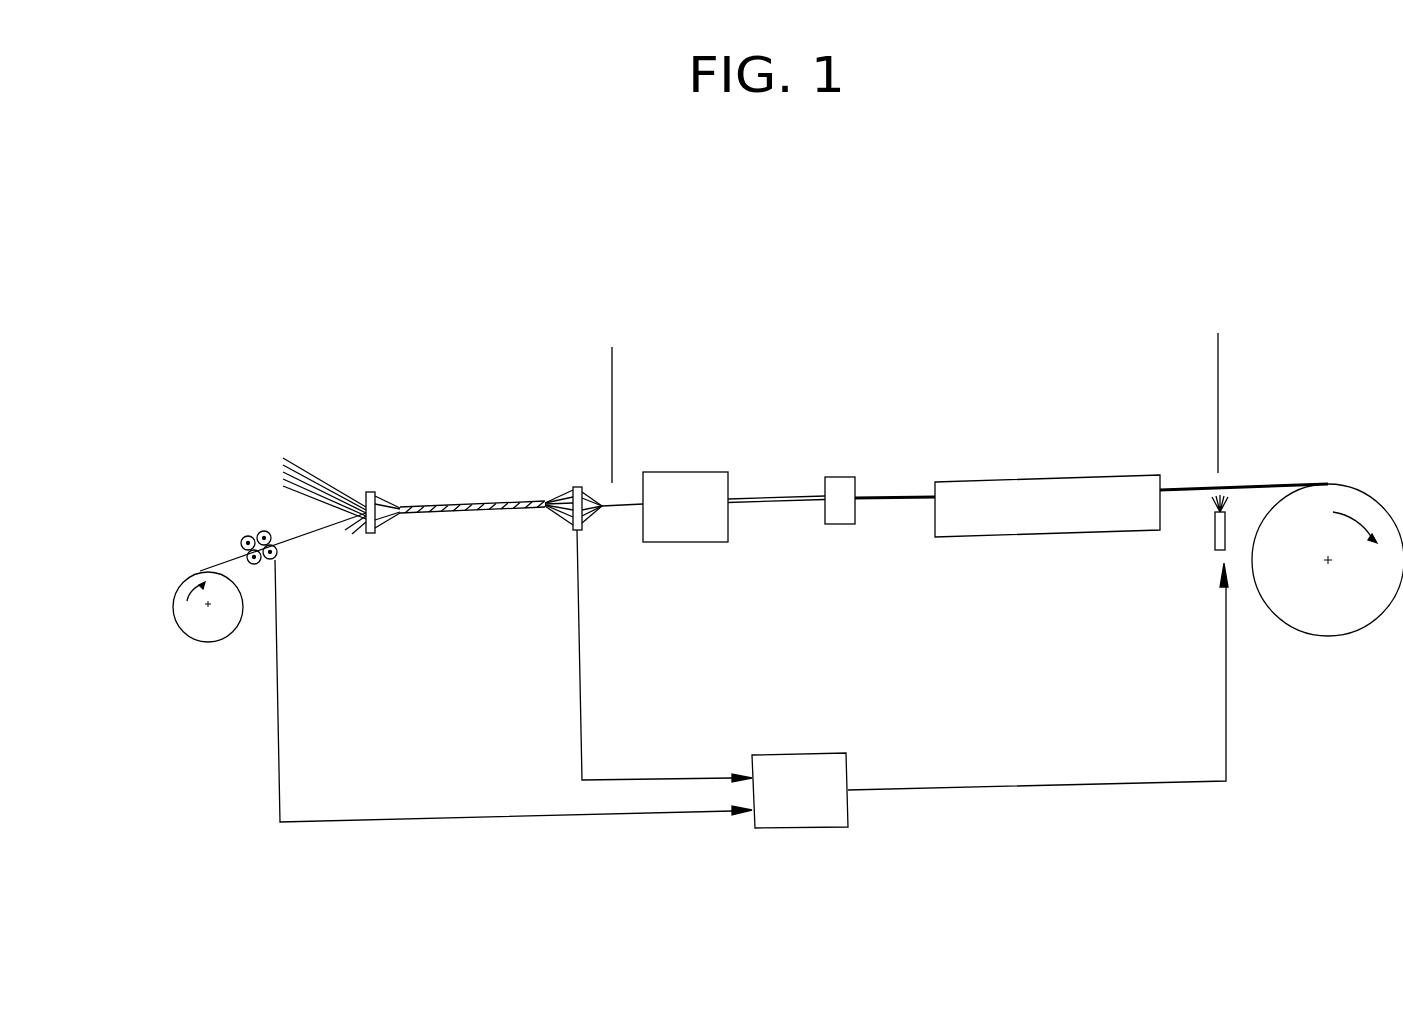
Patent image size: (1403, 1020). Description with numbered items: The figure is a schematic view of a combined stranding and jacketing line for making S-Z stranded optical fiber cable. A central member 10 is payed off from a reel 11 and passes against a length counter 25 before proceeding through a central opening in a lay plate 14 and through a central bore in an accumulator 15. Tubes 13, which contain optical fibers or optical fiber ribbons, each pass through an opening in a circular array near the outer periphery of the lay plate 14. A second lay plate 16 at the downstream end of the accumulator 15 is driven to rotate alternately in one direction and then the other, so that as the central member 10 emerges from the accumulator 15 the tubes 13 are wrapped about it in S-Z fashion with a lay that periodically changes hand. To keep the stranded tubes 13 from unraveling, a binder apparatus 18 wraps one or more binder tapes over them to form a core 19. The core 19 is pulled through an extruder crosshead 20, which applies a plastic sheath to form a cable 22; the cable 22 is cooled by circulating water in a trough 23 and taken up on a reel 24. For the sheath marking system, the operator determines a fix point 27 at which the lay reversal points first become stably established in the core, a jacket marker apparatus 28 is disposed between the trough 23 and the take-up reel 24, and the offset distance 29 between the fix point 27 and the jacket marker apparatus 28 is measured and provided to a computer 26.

The central member 10 is at (310, 532).
The reel 11 is at (208, 628).
The tubes 13 is at (316, 472).
The lay plate 14 is at (370, 485).
The accumulator 15 is at (472, 488).
The lay plate 16 is at (577, 485).
The binder apparatus 18 is at (685, 486).
The core 19 is at (775, 513).
The extruder crosshead 20 is at (837, 479).
The cable 22 is at (894, 510).
The trough 23 is at (1131, 489).
The reel 24 is at (1327, 582).
The length counter 25 is at (243, 538).
The computer 26 is at (751, 679).
The fix point 27 is at (615, 530).
The jacket marker apparatus 28 is at (1210, 538).
The offset distance 29 is at (1200, 334).